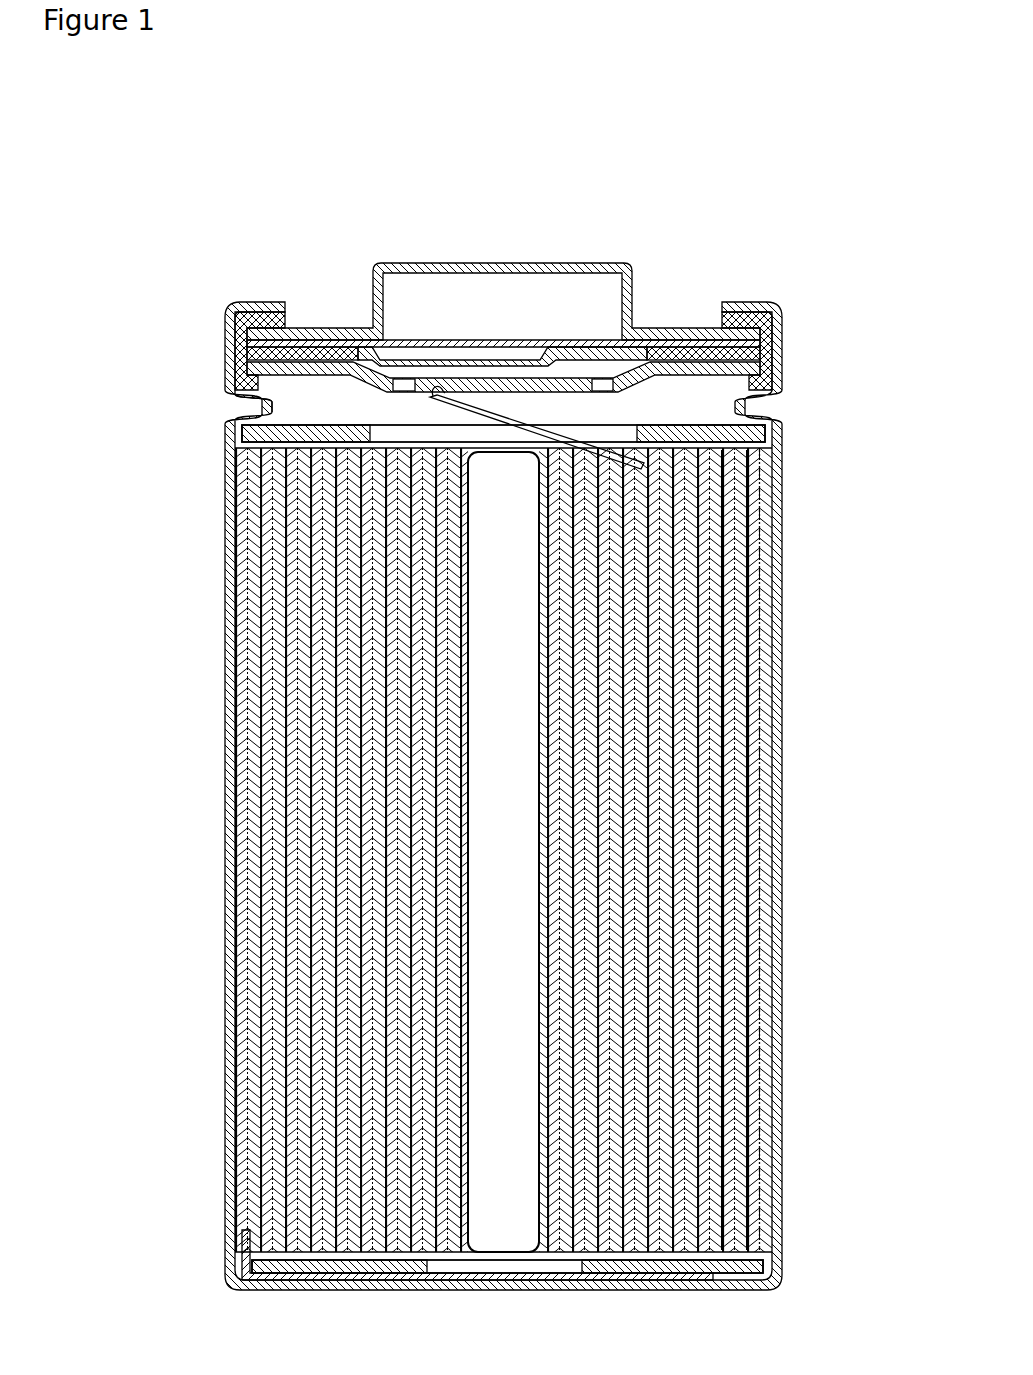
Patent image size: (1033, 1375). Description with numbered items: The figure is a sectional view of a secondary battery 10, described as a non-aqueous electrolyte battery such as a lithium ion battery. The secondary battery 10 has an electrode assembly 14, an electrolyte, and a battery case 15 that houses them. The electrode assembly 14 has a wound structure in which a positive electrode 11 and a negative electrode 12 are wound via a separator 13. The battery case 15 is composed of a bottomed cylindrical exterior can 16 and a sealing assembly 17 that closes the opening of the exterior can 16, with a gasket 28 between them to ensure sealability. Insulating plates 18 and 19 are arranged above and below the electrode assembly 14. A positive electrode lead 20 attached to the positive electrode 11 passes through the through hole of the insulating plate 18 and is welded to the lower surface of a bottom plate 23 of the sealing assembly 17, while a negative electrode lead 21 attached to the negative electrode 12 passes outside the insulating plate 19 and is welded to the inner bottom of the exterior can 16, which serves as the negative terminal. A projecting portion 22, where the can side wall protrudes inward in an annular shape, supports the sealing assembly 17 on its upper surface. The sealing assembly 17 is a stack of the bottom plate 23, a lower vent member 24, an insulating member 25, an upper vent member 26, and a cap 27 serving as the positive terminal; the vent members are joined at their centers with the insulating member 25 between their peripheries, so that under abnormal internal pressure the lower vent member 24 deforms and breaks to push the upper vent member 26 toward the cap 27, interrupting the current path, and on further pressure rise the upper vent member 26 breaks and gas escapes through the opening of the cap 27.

The secondary battery 10 is at (797, 119).
The positive electrode 11 is at (760, 926).
The negative electrode 12 is at (757, 962).
The separator 13 is at (770, 994).
The electrode assembly 14 is at (880, 910).
The battery case 15 is at (763, 198).
The exterior can 16 is at (750, 302).
The sealing assembly 17 is at (663, 328).
The insulating plate 18 is at (770, 437).
The insulating plate 19 is at (765, 1275).
The positive electrode lead 20 is at (428, 399).
The negative electrode lead 21 is at (243, 1262).
The projecting portion 22 is at (236, 408).
The bottom plate 23 is at (505, 385).
The lower vent member 24 is at (386, 352).
The insulating member 25 is at (320, 348).
The upper vent member 26 is at (418, 342).
The cap 27 is at (584, 263).
The gasket 28 is at (782, 328).